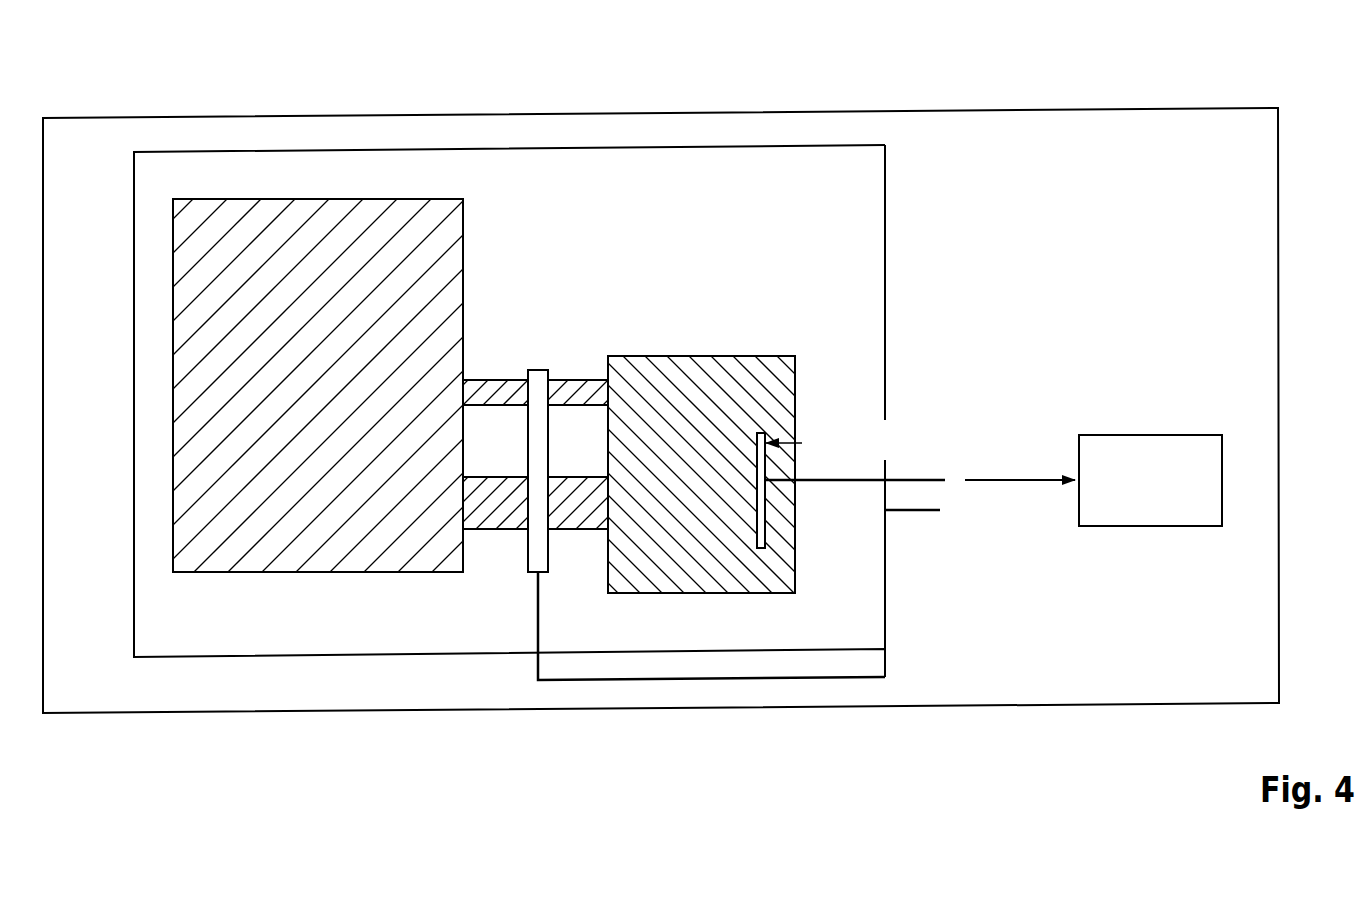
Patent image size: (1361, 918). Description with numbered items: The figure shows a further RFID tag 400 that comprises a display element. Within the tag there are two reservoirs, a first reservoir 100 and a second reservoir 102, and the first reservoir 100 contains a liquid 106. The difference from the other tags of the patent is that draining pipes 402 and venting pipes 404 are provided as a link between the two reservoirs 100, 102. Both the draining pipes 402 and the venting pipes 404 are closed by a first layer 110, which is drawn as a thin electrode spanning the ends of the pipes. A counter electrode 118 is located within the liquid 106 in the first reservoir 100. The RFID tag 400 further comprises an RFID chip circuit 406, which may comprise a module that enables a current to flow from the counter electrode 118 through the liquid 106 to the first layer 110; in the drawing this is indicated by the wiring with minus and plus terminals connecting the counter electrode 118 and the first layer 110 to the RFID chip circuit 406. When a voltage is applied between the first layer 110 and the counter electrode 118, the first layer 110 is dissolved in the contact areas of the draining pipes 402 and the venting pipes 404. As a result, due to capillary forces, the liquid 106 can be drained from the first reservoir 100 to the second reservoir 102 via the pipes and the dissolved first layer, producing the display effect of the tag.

The first reservoir 100 is at (665, 355).
The second reservoir 102 is at (297, 199).
The liquid 106 is at (749, 371).
The first layer 110 is at (535, 369).
The counter electrode 118 is at (762, 548).
The RFID tag 400 is at (672, 112).
The draining pipes 402 is at (592, 530).
The venting pipes 404 is at (495, 380).
The RFID chip circuit 406 is at (1222, 472).